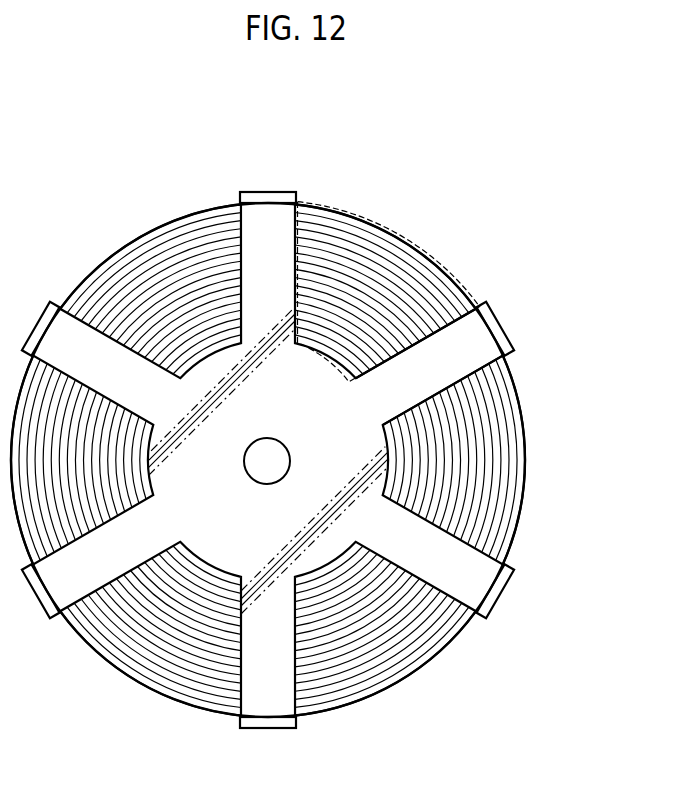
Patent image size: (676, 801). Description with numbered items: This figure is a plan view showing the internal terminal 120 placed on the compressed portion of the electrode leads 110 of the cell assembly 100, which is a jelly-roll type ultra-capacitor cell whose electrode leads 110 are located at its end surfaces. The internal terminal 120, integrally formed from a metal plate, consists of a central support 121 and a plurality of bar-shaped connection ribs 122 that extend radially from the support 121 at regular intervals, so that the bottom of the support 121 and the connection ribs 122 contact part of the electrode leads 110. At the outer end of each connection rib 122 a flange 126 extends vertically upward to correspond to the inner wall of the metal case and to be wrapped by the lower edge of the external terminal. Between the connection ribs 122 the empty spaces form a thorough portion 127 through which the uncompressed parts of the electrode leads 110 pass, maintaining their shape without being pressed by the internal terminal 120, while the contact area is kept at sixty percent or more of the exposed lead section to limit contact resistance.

The cell assembly 100 is at (423, 218).
The electrode leads 110 is at (450, 282).
The internal terminal 120 is at (323, 409).
The support 121 is at (363, 453).
The connection ribs 122 is at (467, 360).
The flange 126 is at (493, 330).
The thorough portion 127 is at (343, 212).